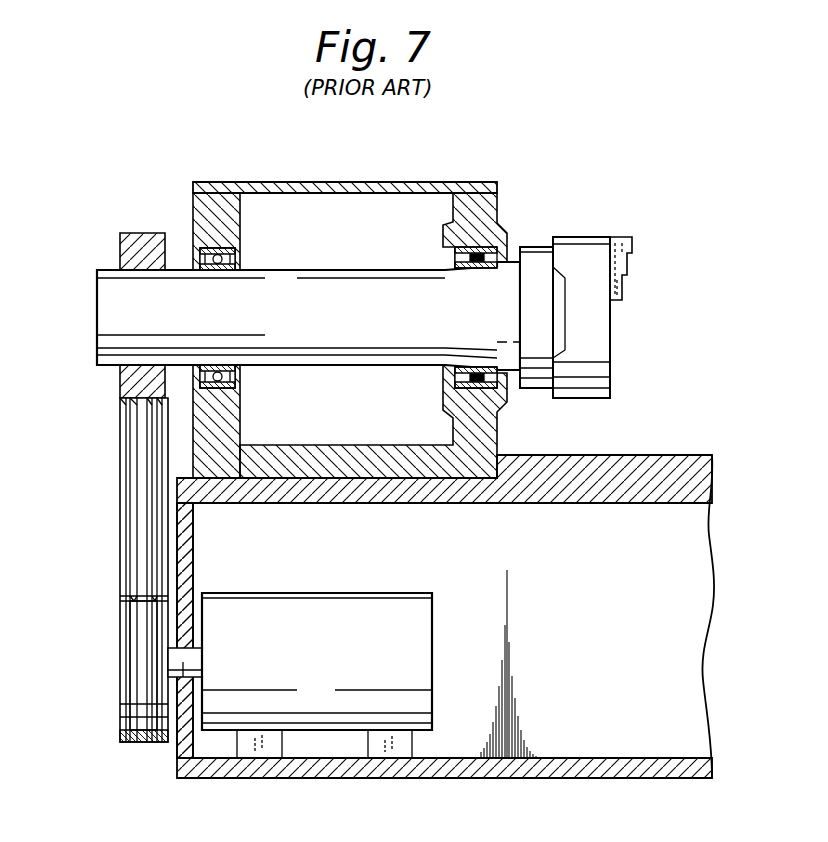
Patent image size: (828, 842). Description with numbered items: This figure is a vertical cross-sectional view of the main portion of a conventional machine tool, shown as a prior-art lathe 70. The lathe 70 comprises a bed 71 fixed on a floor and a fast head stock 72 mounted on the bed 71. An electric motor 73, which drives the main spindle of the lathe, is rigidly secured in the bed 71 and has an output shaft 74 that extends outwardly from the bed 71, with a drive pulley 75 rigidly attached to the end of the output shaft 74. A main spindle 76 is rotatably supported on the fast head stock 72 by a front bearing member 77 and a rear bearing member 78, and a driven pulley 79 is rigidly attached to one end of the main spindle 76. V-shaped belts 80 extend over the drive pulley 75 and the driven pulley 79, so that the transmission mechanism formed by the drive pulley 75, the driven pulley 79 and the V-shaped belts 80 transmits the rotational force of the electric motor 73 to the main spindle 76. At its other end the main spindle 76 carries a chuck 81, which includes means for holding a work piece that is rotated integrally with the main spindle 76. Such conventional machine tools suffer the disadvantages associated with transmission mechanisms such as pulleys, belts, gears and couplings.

The lathe 70 is at (78, 152).
The bed 71 is at (568, 762).
The fast head stock 72 is at (290, 181).
The electric motor 73 is at (297, 706).
The output shaft 74 is at (183, 750).
The drive pulley 75 is at (143, 637).
The main spindle 76 is at (355, 292).
The front bearing member 77 is at (500, 232).
The rear bearing member 78 is at (203, 254).
The driven pulley 79 is at (120, 256).
The V-shaped belts 80 is at (153, 532).
The chuck 81 is at (579, 250).